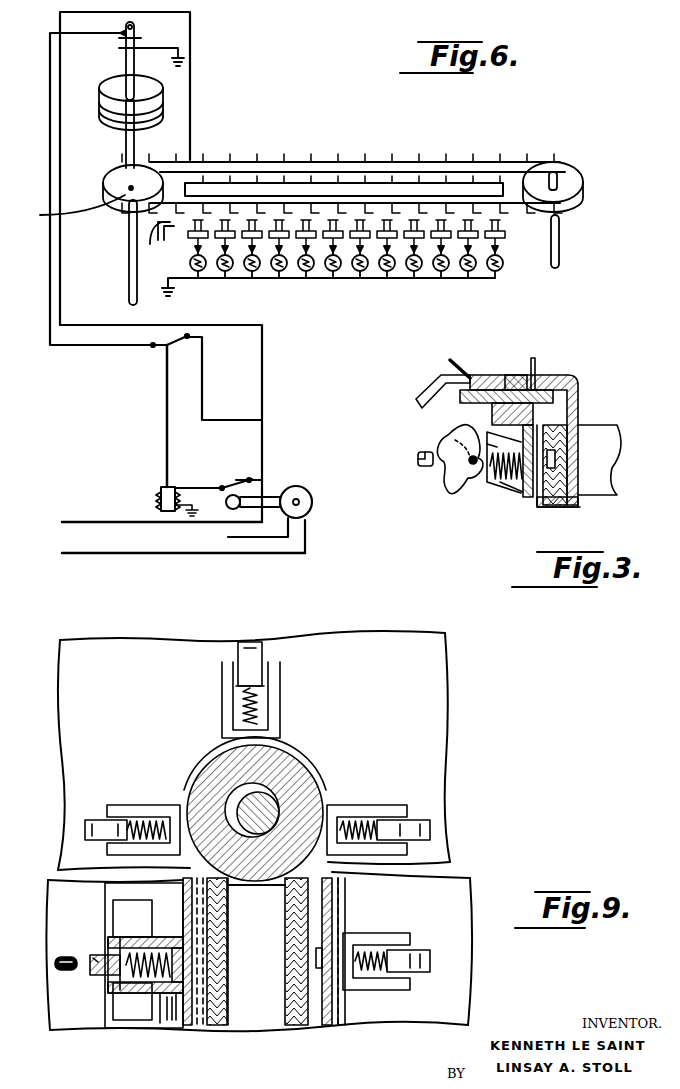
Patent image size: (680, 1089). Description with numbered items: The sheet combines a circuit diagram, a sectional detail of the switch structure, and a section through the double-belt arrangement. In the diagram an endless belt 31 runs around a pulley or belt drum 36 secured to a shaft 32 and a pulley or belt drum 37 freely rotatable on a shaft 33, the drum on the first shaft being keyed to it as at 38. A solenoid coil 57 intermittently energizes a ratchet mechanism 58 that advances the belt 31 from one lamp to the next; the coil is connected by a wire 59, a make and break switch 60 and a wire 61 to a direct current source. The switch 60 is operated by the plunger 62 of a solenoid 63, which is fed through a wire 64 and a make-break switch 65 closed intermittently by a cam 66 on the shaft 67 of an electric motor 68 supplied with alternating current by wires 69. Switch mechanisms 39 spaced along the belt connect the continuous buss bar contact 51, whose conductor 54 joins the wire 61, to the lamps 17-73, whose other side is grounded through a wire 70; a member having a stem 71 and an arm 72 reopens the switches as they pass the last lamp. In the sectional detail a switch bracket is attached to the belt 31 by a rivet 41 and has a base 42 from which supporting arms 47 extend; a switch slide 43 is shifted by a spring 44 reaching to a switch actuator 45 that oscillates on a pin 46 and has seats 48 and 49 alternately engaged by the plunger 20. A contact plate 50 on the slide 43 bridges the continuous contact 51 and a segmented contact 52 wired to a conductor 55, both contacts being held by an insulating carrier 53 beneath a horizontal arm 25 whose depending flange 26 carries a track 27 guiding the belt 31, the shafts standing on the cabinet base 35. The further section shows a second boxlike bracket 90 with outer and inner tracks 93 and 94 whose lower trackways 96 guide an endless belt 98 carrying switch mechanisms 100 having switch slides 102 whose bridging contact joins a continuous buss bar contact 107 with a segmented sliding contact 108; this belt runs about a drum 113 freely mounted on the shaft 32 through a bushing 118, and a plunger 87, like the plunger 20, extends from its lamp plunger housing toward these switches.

In FIG. 6, the lamps 17-73 is at (504, 265).
In FIG. 3, the plunger 20 is at (416, 464).
In FIG. 3, the horizontal arm 25 is at (512, 375).
In FIG. 3, the depending flange 26 is at (580, 502).
In FIG. 9, the depending flange 26 is at (232, 896).
In FIG. 3, the track 27 is at (560, 508).
In FIG. 6, the endless belt 31 is at (430, 168).
In FIG. 3, the endless belt 31 is at (560, 479).
In FIG. 6, the shaft 32 is at (129, 272).
In FIG. 9, the shaft 32 is at (300, 772).
In FIG. 6, the shaft 33 is at (560, 244).
In FIG. 9, the cabinet base 35 is at (447, 688).
In FIG. 6, the pulley or belt drum 36 is at (112, 172).
In FIG. 3, the pulley or belt drum 36 is at (622, 470).
In FIG. 6, the pulley or belt drum 37 is at (583, 182).
In FIG. 6, the key 38 is at (69, 209).
In FIG. 6, the switch mechanism 39 is at (256, 214).
In FIG. 3, the attaching member 41 is at (486, 493).
In FIG. 9, the attaching member 41 is at (229, 956).
In FIG. 3, the base 42 is at (556, 438).
In FIG. 9, the base 42 is at (342, 1026).
In FIG. 3, the switch slide 43 is at (529, 500).
In FIG. 3, the spring 44 is at (508, 472).
In FIG. 9, the spring 44 is at (140, 960).
In FIG. 3, the switch actuator 45 is at (474, 462).
In FIG. 9, the switch actuator 45 is at (98, 976).
In FIG. 3, the trunnion or pin 46 is at (480, 486).
In FIG. 9, the trunnion or pin 46 is at (150, 993).
In FIG. 3, the supporting arms 47 is at (510, 503).
In FIG. 9, the supporting arms 47 is at (176, 1022).
In FIG. 3, the seat 48 is at (468, 463).
In FIG. 3, the seat 49 is at (464, 438).
In FIG. 9, the seat 49 is at (93, 957).
In FIG. 3, the contact plate 50 is at (560, 410).
In FIG. 6, the contact 51 is at (488, 190).
In FIG. 3, the contact 51 is at (580, 392).
In FIG. 6, the contact 52 is at (506, 236).
In FIG. 3, the contact 52 is at (470, 392).
In FIG. 3, the carrier 53 is at (570, 377).
In FIG. 6, the electrical current conductor 54 is at (190, 88).
In FIG. 3, the electrical current conductor 54 is at (536, 364).
In FIG. 3, the conductor 55 is at (466, 370).
In FIG. 6, the solenoid coil 57 is at (135, 46).
In FIG. 6, the ratchet mechanism 58 is at (124, 82).
In FIG. 6, the wire 59 is at (92, 345).
In FIG. 6, the make and break switch 60 is at (181, 342).
In FIG. 6, the wire 61 is at (274, 433).
In FIG. 6, the plunger 62 is at (166, 440).
In FIG. 6, the solenoid 63 is at (161, 485).
In FIG. 6, the wire 64 is at (200, 487).
In FIG. 6, the make-break switch 65 is at (238, 478).
In FIG. 6, the cam 66 is at (228, 512).
In FIG. 6, the shaft 67 is at (288, 487).
In FIG. 6, the electric motor 68 is at (312, 502).
In FIG. 6, the wires 69 is at (230, 553).
In FIG. 6, the wire 70 is at (306, 279).
In FIG. 6, the stem 71 is at (152, 245).
In FIG. 6, the arm 72 is at (168, 237).
In FIG. 9, the plunger 87 is at (84, 952).
In FIG. 9, the second boxlike bracket 90 is at (286, 926).
In FIG. 9, the track 93 is at (218, 1027).
In FIG. 9, the track 94 is at (300, 1027).
In FIG. 9, the lower trackway 96 is at (290, 975).
In FIG. 9, the endless belt 98 is at (192, 770).
In FIG. 9, the switch mechanism 100 is at (136, 792).
In FIG. 9, the switch slide 102 is at (158, 1026).
In FIG. 9, the continuous buss bar contact 107 is at (172, 1025).
In FIG. 9, the segmented bar or individual sliding contact 108 is at (148, 1022).
In FIG. 9, the drum or pulley 113 is at (208, 750).
In FIG. 9, the bushing or sleeve 118 is at (270, 800).